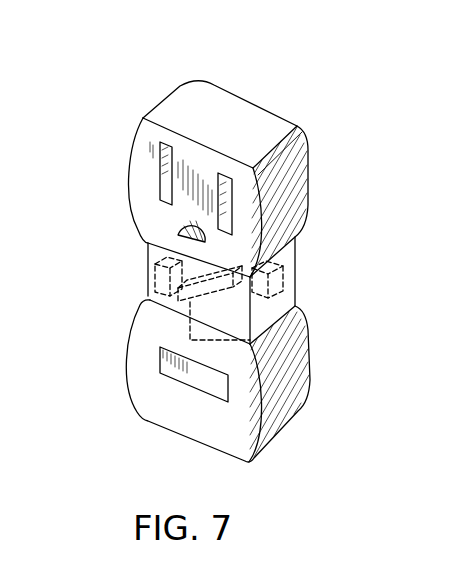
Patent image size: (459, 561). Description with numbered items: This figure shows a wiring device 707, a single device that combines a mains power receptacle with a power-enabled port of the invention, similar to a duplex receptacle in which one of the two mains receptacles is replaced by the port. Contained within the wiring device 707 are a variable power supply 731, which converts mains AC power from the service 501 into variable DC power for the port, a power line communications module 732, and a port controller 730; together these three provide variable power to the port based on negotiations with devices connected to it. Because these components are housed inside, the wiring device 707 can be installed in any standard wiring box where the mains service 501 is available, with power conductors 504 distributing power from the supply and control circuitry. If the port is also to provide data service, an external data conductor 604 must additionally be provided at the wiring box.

The wiring device 707 is at (172, 112).
The external data conductor 604 is at (148, 244).
The mains service 501 is at (294, 268).
The port controller 730 is at (155, 276).
The variable power supply 731 is at (283, 291).
The power line communications module 732 is at (176, 300).
The power conductors 504 is at (200, 380).